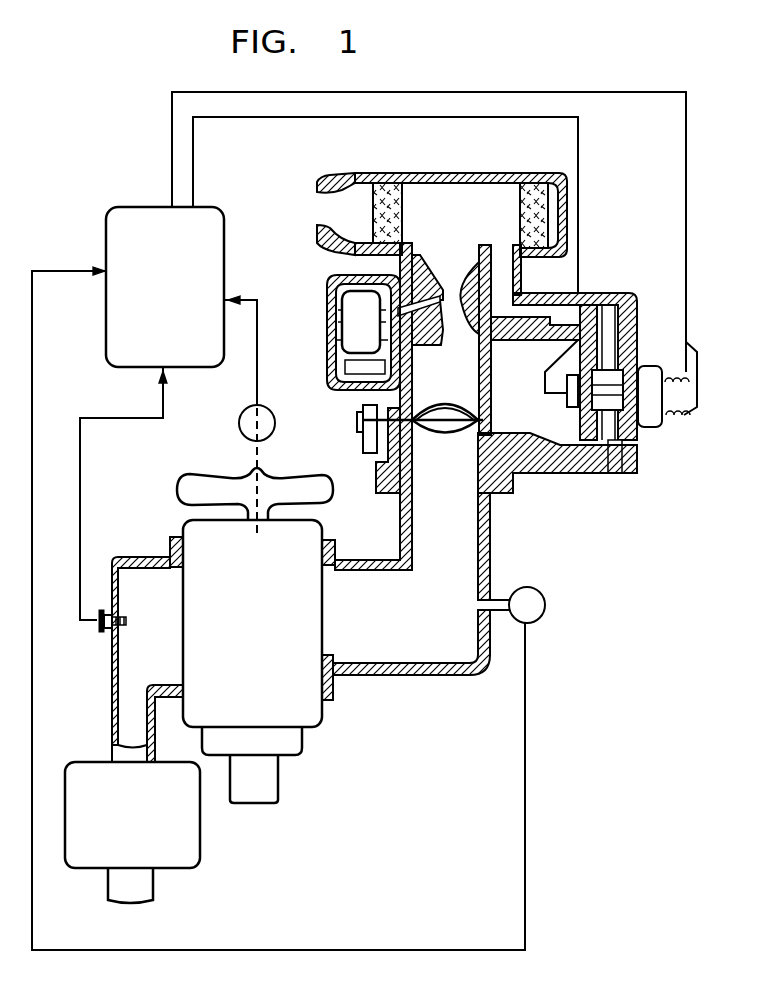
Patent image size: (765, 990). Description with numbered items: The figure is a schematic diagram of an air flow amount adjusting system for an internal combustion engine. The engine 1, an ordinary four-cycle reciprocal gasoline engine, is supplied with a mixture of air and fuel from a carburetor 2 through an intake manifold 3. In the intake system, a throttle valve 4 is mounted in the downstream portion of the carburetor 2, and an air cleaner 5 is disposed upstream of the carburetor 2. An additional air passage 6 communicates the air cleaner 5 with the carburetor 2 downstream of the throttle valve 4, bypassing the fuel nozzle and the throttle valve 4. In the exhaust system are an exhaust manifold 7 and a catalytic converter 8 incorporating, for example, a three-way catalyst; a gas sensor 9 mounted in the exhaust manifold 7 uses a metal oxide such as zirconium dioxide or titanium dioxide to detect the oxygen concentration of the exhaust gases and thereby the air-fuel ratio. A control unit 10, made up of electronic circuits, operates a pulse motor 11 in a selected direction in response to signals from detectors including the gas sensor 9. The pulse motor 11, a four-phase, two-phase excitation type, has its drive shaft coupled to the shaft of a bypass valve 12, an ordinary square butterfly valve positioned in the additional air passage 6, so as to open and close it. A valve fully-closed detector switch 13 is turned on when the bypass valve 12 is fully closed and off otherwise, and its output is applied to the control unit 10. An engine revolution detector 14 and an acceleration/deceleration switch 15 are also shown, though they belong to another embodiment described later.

The engine 1 is at (316, 716).
The carburetor 2 is at (470, 262).
The intake manifold 3 is at (423, 675).
The throttle valve 4 is at (446, 435).
The air cleaner 5 is at (400, 207).
The additional air passage 6 is at (610, 318).
The exhaust manifold 7 is at (120, 722).
The catalytic converter 8 is at (200, 828).
The gas sensor 9 is at (101, 630).
The control unit 10 is at (108, 317).
The pulse motor 11 is at (650, 421).
The bypass valve 12 is at (611, 447).
The valve fully-closed detector switch 13 is at (566, 396).
The engine revolution detector 14 is at (275, 423).
The acceleration/deceleration switch 15 is at (527, 587).